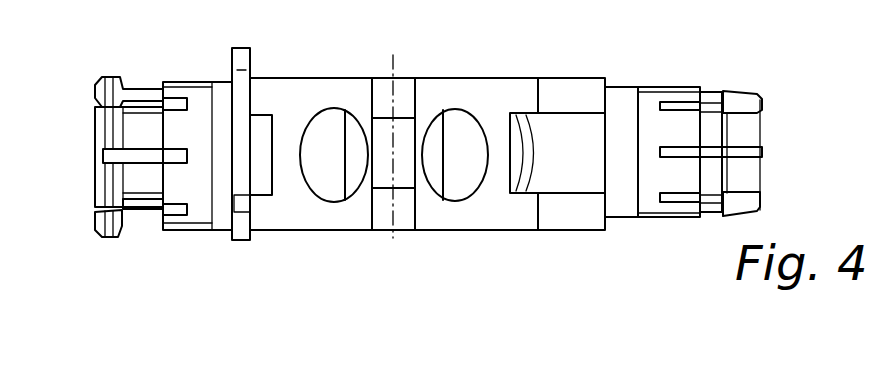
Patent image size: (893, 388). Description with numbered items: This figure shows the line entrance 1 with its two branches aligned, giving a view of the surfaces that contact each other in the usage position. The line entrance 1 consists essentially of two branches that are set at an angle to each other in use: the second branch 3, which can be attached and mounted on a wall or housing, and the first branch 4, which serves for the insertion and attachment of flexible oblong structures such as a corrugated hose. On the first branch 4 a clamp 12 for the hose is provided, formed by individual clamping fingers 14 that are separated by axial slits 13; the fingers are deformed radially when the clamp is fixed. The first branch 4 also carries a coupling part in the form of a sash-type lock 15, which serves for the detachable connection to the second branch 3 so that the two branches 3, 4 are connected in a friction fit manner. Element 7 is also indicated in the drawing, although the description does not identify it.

The line entrance 1 is at (270, 267).
The second branch 3 is at (500, 78).
The first branch 4 is at (300, 85).
The hinge 7 is at (394, 63).
The clamp 12 is at (143, 80).
The axial slits 13 is at (104, 153).
The clamping fingers 14 is at (136, 182).
The sash-type lock 15 is at (232, 63).